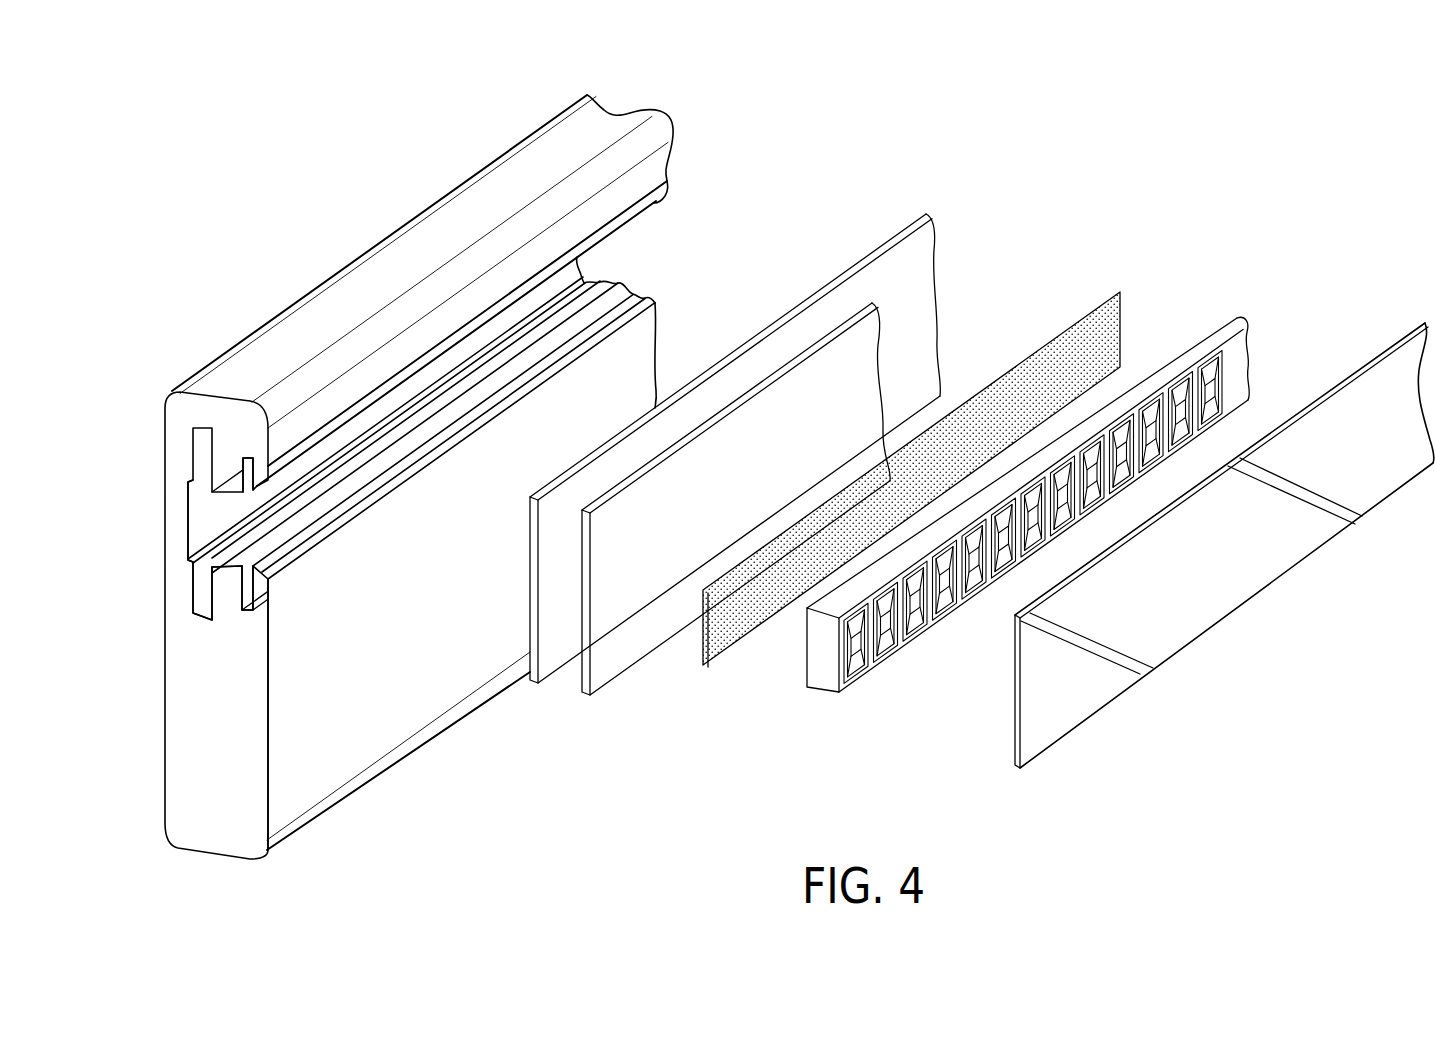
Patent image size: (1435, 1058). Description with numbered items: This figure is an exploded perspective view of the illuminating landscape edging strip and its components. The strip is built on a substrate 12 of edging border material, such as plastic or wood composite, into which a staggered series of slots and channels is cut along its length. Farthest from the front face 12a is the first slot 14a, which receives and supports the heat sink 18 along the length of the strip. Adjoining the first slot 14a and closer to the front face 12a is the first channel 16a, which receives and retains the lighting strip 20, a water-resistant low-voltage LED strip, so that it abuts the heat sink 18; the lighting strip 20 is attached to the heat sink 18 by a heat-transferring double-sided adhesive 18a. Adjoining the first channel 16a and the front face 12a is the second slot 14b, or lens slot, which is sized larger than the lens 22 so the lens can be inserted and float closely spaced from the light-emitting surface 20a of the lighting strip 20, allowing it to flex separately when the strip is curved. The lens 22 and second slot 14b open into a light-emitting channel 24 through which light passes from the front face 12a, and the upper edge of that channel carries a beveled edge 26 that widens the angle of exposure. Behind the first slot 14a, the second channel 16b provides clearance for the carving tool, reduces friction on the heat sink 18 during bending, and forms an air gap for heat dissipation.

The substrate 12 is at (404, 254).
The front face 12a is at (417, 653).
The first slot 14a is at (213, 598).
The second slot 14b is at (240, 470).
The first channel 16a is at (242, 558).
The second channel 16b is at (208, 511).
The heat sink 18 is at (595, 705).
The heat-transferring double-sided adhesive 18a is at (713, 657).
The lighting strip 20 is at (825, 677).
The light-emitting surface 20a is at (883, 648).
The lens 22 is at (1072, 711).
The light-emitting channel 24 is at (243, 566).
The beveled edge 26 is at (317, 443).